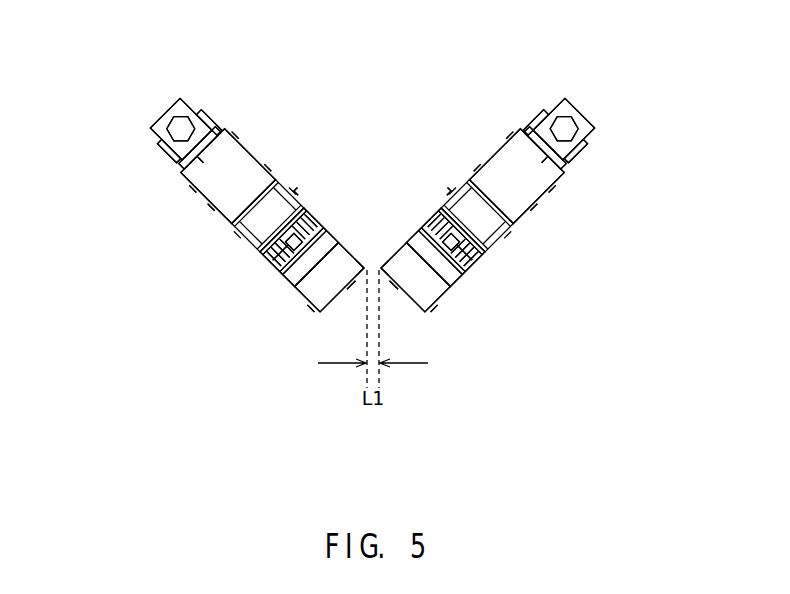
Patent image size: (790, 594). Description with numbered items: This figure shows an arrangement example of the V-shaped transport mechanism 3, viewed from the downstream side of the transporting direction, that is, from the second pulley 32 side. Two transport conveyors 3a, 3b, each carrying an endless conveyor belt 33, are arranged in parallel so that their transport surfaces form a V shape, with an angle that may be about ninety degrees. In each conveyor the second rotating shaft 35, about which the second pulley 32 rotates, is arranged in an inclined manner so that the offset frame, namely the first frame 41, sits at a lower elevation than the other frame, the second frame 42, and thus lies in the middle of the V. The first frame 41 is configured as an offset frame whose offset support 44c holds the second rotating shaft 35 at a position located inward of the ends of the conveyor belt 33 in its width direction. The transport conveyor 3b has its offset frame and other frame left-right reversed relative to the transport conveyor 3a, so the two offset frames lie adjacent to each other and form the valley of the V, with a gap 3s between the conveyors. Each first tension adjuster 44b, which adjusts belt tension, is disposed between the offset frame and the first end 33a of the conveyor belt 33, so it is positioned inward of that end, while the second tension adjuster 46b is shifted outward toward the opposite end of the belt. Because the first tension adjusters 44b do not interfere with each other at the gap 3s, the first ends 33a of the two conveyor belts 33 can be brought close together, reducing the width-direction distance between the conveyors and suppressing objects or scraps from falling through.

The V-shaped transport mechanism 3 is at (372, 159).
The transport conveyor 3a is at (488, 190).
The transport conveyor 3b is at (281, 132).
The gap 3s is at (359, 304).
The second pulley 32 is at (195, 230).
The conveyor belt 33 is at (300, 187).
The first end 33a is at (364, 262).
The second rotating shaft 35 is at (162, 108).
The first frame 41 is at (375, 262).
The second frame 42 is at (168, 177).
The first tension adjuster 44b is at (286, 306).
The offset support 44c is at (279, 306).
The second tension adjuster 46b is at (207, 101).